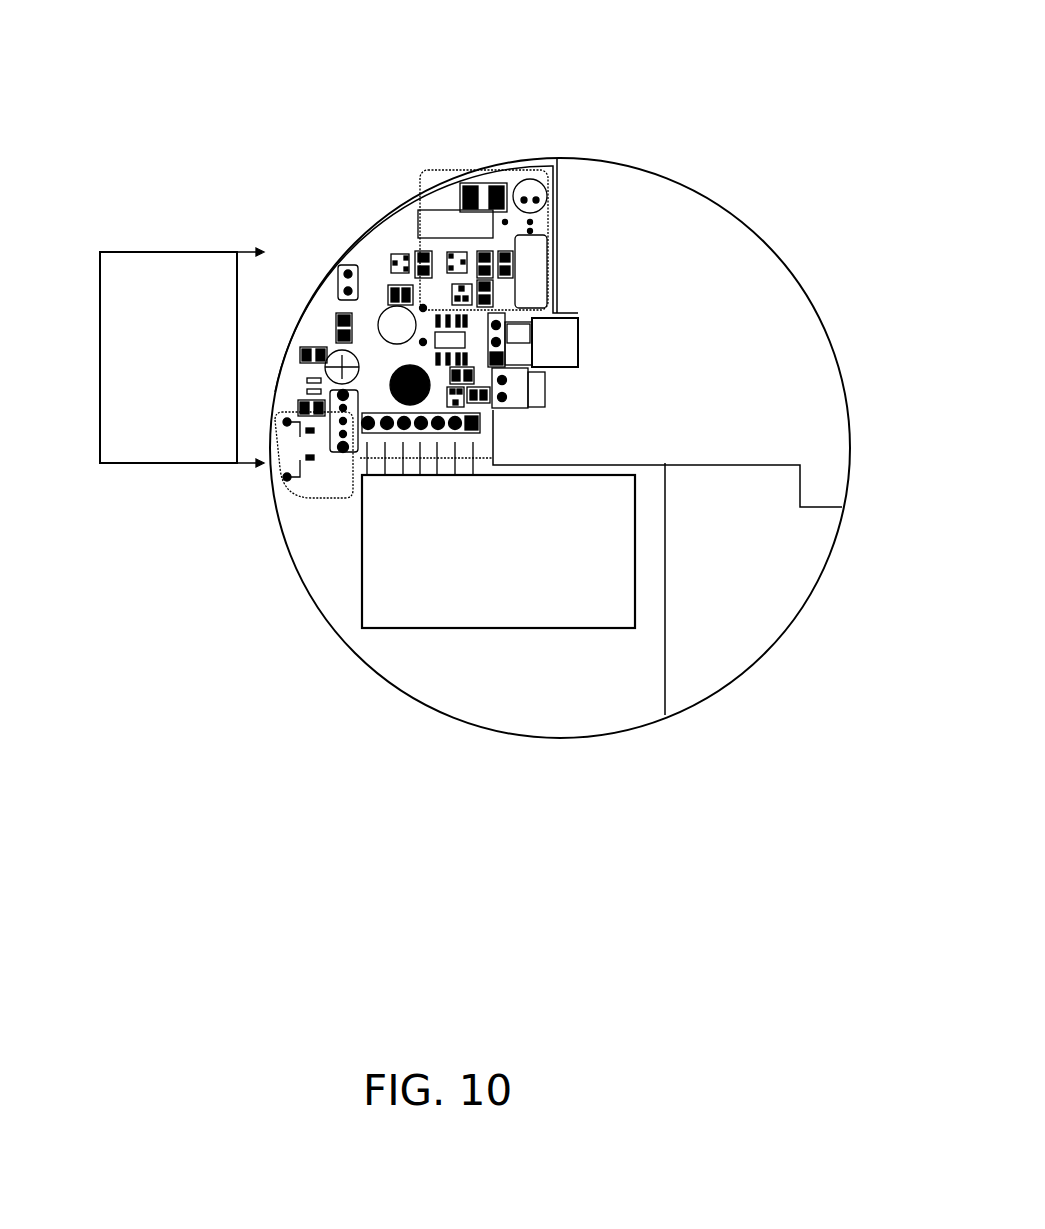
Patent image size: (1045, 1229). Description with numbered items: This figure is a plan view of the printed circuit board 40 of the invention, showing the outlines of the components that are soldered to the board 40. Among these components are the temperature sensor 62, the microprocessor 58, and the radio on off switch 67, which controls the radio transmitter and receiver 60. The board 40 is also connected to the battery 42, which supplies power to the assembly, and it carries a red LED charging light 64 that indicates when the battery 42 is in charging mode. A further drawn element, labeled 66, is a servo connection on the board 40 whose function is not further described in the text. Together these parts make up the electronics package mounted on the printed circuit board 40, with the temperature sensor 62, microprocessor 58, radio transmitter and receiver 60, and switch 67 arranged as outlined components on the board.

The printed circuit board 40 is at (723, 263).
The battery 42 is at (140, 260).
The microprocessor 58 is at (480, 430).
The radio transmitter and receiver 60 is at (497, 588).
The temperature sensor 62 is at (385, 313).
The red LED charging light 64 is at (337, 355).
The servo 66 is at (577, 313).
The radio on off switch 67 is at (343, 447).